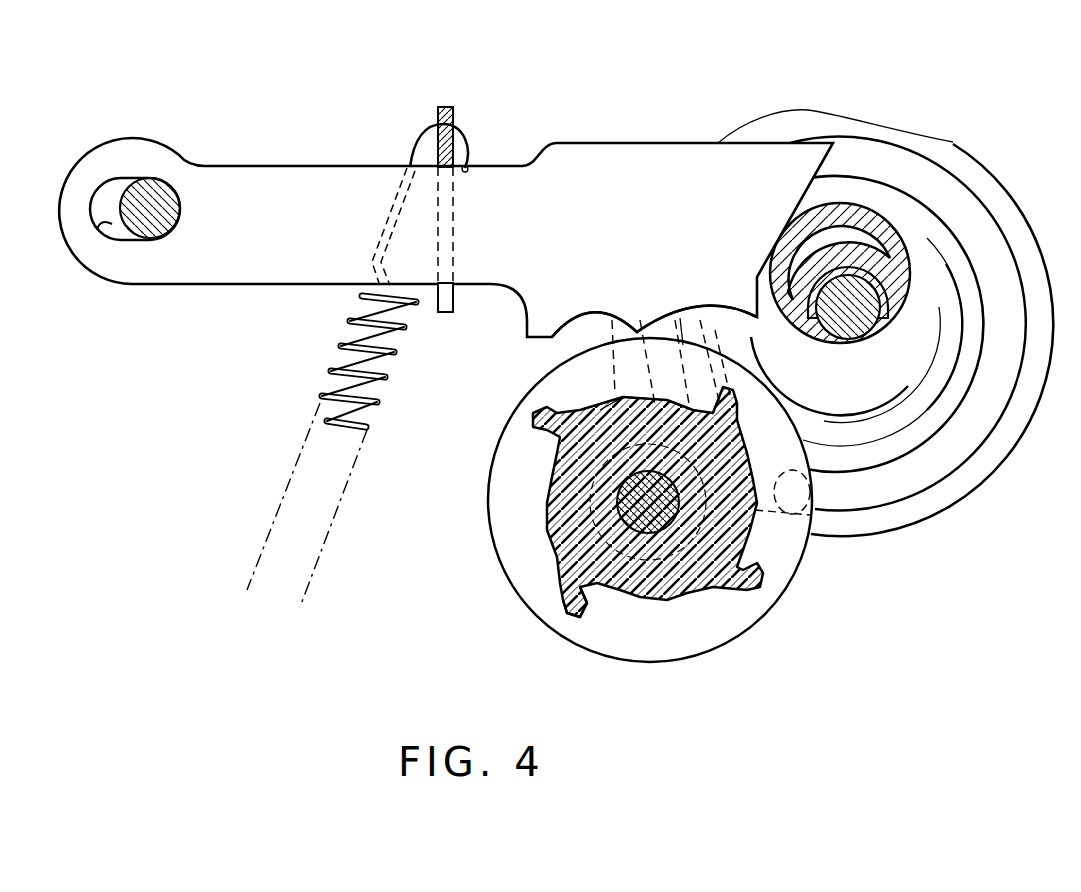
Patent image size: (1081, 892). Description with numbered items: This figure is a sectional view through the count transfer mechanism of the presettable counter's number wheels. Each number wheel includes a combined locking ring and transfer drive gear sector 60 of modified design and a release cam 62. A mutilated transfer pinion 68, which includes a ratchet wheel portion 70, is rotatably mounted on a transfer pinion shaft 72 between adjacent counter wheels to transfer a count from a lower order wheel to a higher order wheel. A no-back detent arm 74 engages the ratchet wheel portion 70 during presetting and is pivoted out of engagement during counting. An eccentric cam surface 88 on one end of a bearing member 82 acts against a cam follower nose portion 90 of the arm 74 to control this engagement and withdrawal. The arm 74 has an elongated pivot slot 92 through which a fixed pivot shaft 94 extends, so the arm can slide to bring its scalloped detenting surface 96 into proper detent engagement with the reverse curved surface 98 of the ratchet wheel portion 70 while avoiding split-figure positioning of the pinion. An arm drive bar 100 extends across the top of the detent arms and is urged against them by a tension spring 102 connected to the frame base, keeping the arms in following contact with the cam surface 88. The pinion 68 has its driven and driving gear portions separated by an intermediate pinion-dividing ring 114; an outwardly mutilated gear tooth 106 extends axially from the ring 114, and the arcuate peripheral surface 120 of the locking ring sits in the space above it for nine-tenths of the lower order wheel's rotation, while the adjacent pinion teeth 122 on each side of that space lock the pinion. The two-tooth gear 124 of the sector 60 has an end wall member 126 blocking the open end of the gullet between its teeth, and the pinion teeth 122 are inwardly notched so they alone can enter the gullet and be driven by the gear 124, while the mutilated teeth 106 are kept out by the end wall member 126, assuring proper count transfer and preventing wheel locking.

The combined locking ring and transfer drive gear sector 60 is at (963, 449).
The release cam 62 is at (967, 148).
The mutilated transfer pinion 68 is at (629, 498).
The ratchet wheel portion 70 is at (597, 403).
The transfer pinion shaft 72 is at (787, 585).
The no-back detent arm 74 is at (578, 220).
The bearing member 82 is at (906, 373).
The eccentric cam surface 88 is at (880, 250).
The cam follower nose portion 90 is at (804, 178).
The elongated pivot slot 92 is at (108, 228).
The fixed pivot shaft 94 is at (163, 195).
The scalloped detenting surface 96 is at (660, 317).
The reverse curved surface 98 is at (640, 402).
The arm drive bar 100 is at (447, 107).
The tension spring 102 is at (404, 325).
The mutilated gear tooth 106 is at (676, 312).
The pinion-dividing ring 114 is at (492, 576).
The arcuate peripheral surface 120 is at (903, 505).
The pinion tooth 122 is at (652, 604).
The two-tooth gear 124 is at (813, 493).
The end wall member 126 is at (755, 425).